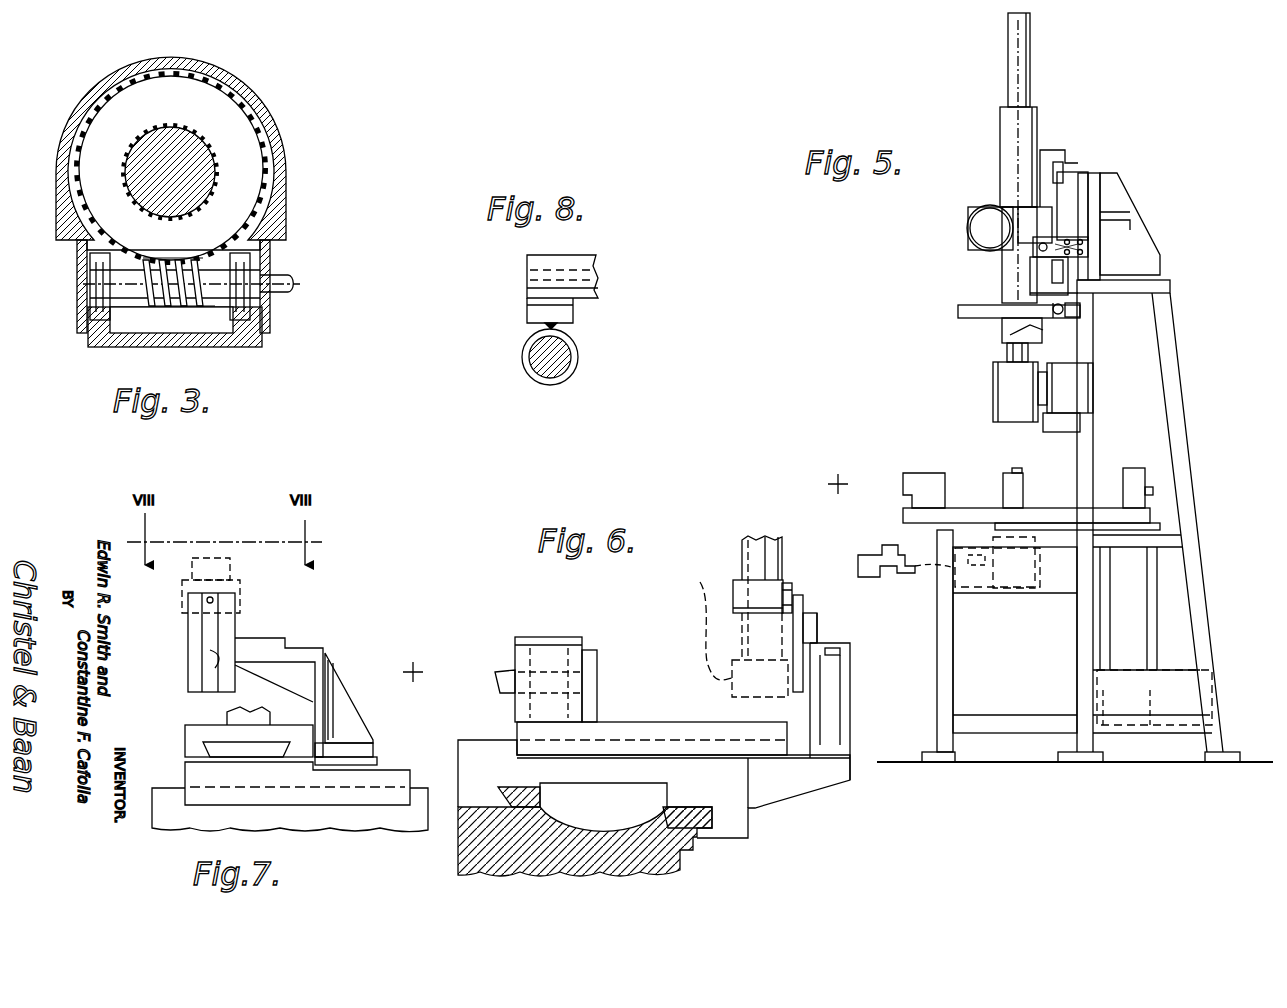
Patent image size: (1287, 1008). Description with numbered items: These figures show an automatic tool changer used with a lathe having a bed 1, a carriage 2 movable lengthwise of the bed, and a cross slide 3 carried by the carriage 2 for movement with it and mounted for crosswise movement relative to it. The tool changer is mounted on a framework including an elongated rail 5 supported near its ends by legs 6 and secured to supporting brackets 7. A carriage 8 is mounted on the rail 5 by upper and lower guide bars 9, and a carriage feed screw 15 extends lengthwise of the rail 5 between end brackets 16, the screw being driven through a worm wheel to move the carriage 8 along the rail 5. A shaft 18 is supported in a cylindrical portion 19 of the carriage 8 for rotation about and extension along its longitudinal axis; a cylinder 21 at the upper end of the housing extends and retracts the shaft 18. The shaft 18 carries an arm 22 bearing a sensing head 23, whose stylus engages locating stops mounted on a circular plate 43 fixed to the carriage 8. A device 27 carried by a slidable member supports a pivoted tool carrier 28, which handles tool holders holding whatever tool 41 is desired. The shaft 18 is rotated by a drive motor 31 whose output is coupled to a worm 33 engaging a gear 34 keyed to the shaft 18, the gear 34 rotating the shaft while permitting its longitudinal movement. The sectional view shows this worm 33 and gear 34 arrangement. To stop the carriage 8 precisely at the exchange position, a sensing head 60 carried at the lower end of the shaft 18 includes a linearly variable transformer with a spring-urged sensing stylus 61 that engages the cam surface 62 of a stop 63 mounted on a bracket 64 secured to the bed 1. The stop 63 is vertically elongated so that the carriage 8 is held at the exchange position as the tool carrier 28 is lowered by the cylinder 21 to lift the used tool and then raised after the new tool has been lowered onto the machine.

In FIG. 5, the bed 1 is at (912, 585).
In FIG. 7, the bed 1 is at (355, 825).
In FIG. 6, the bed 1 is at (668, 857).
In FIG. 5, the carriage 2 is at (1025, 523).
In FIG. 7, the carriage 2 is at (392, 770).
In FIG. 6, the carriage 2 is at (480, 762).
In FIG. 5, the cross slide 3 is at (972, 508).
In FIG. 7, the cross slide 3 is at (190, 738).
In FIG. 6, the cross slide 3 is at (650, 722).
In FIG. 5, the rail 5 is at (1088, 182).
In FIG. 5, the legs 6 is at (1198, 565).
In FIG. 5, the supporting brackets 7 is at (1128, 208).
In FIG. 5, the carriage 8 is at (1065, 145).
In FIG. 5, the guide bars 9 is at (1063, 160).
In FIG. 5, the carriage feed screw 15 is at (1018, 258).
In FIG. 5, the end brackets 16 is at (1088, 246).
In FIG. 3, the shaft 18 is at (152, 153).
In FIG. 5, the shaft 18 is at (1007, 352).
In FIG. 5, the cylindrical portion 19 is at (1037, 124).
In FIG. 5, the cylinder 21 is at (1008, 45).
In FIG. 5, the arm 22 is at (1043, 330).
In FIG. 5, the sensing head 23 is at (1064, 309).
In FIG. 5, the device 27 is at (1073, 388).
In FIG. 5, the tool carrier 28 is at (1015, 386).
In FIG. 5, the drive motor 31 is at (980, 226).
In FIG. 3, the worm 33 is at (195, 318).
In FIG. 3, the gear 34 is at (237, 143).
In FIG. 5, the tool 41 is at (1153, 490).
In FIG. 6, the tool 41 is at (495, 684).
In FIG. 5, the circular plate 43 is at (958, 312).
In FIG. 8, the sensing head 60 is at (572, 366).
In FIG. 7, the sensing head 60 is at (250, 586).
In FIG. 6, the sensing head 60 is at (742, 590).
In FIG. 8, the sensing stylus 61 is at (560, 327).
In FIG. 6, the sensing stylus 61 is at (790, 598).
In FIG. 8, the cam surface 62 is at (580, 318).
In FIG. 7, the cam surface 62 is at (188, 626).
In FIG. 6, the cam surface 62 is at (798, 626).
In FIG. 8, the stop 63 is at (527, 316).
In FIG. 7, the stop 63 is at (238, 632).
In FIG. 6, the stop 63 is at (818, 606).
In FIG. 7, the bracket 64 is at (328, 677).